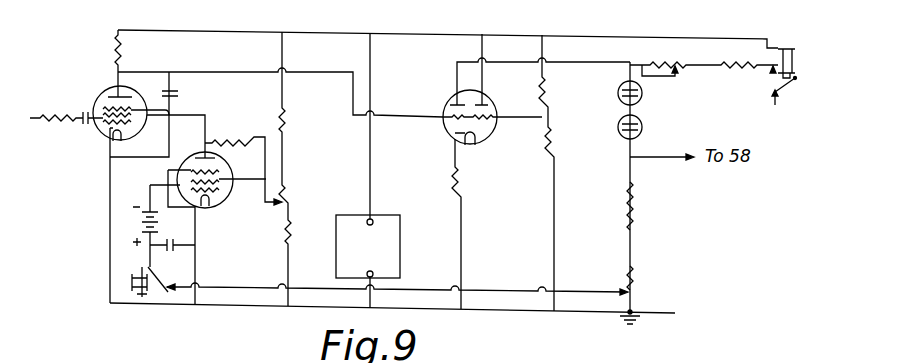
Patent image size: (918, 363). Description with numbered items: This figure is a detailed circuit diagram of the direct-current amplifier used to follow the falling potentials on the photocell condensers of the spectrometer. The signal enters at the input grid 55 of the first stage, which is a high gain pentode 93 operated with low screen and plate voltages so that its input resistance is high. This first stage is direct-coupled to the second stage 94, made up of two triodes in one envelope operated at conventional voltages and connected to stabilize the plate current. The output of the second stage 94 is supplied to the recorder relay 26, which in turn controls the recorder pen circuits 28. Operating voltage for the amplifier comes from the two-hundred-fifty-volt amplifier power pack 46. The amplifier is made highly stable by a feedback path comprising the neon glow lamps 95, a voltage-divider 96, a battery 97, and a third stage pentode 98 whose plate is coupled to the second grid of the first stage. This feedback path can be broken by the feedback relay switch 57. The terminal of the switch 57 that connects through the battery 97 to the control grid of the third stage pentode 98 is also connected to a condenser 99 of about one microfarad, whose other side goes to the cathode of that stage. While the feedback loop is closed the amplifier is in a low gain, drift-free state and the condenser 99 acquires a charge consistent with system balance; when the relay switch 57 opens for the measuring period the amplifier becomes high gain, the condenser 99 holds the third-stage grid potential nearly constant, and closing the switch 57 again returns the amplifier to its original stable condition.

The high gain pentode 93 is at (100, 97).
The input grid 55 is at (100, 122).
The third stage pentode 98 is at (201, 152).
The battery 97 is at (143, 218).
The condenser 99 is at (185, 232).
The feedback relay switch 57 is at (131, 278).
The amplifier power pack 46 is at (400, 238).
The second stage 94 is at (450, 104).
The neon glow lamps 95 is at (655, 93).
The voltage-divider 96 is at (636, 290).
The recorder relay 26 is at (783, 30).
The recorder pen circuits 28 is at (773, 103).